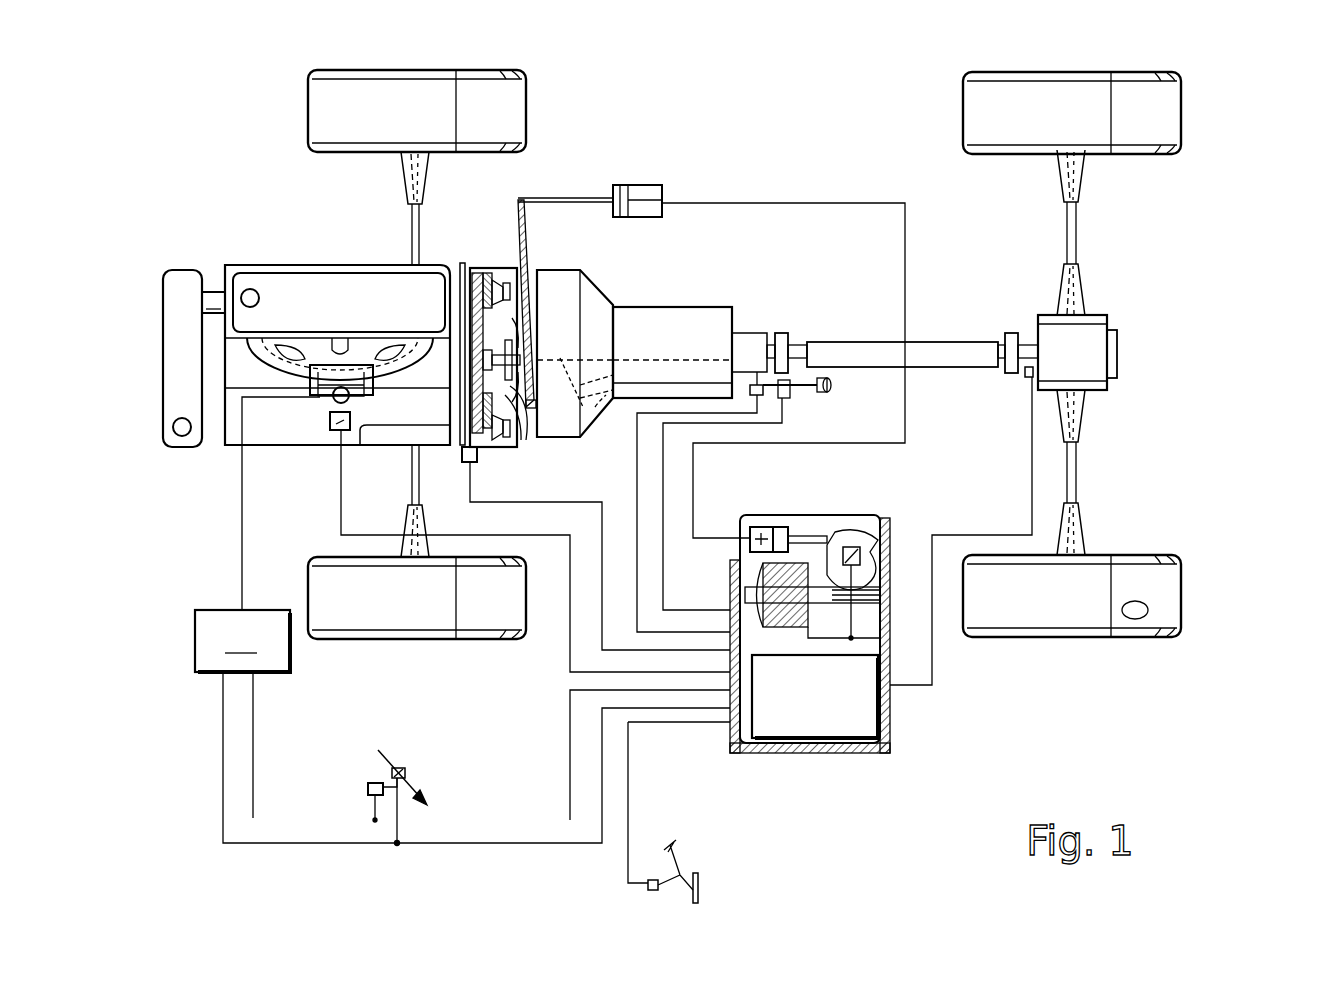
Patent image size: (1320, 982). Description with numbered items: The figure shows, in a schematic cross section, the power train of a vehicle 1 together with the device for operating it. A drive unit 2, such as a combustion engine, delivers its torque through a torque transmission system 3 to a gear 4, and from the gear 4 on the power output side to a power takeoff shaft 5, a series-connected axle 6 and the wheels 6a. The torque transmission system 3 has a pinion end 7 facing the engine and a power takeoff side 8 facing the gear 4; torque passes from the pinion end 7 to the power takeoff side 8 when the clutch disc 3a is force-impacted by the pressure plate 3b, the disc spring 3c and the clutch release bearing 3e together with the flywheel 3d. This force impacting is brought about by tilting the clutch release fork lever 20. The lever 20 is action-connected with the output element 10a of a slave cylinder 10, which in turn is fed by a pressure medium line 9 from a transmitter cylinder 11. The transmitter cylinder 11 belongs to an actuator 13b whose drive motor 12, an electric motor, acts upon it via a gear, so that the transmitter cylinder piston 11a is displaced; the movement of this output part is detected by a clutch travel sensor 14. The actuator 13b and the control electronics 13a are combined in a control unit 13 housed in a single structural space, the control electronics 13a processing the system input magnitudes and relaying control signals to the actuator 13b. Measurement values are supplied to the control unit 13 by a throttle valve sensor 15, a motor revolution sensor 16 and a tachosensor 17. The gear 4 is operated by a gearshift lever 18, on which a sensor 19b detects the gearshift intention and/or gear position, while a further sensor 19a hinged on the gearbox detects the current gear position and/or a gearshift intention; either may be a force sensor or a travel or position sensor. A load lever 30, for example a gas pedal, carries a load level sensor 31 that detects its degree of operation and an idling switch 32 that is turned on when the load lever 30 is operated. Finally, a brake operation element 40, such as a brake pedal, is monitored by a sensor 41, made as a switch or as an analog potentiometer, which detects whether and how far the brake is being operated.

The vehicle 1 is at (775, 90).
The drive unit 2 is at (278, 295).
The torque transmission system 3 is at (513, 353).
The clutch disc 3a is at (516, 440).
The pressure plate 3b is at (503, 300).
The disc spring 3c is at (515, 335).
The flywheel 3d is at (505, 447).
The clutch release bearing 3e is at (590, 410).
The gear 4 is at (668, 367).
The power takeoff shaft 5 is at (946, 342).
The axle 6 is at (1077, 478).
The wheels 6a is at (1152, 112).
The pinion end 7 is at (460, 290).
The power takeoff side 8 is at (545, 275).
The hydraulic line 9 is at (727, 200).
The slave cylinder 10 is at (648, 192).
The output element 10a is at (572, 198).
The transmitter cylinder 11 is at (758, 527).
The transmitter cylinder piston 11a is at (778, 527).
The drive motor 12 is at (755, 575).
The control unit 13 is at (728, 745).
The control electronics 13a is at (788, 707).
The actuator 13b is at (822, 631).
The clutch travel sensor 14 is at (862, 548).
The throttle valve sensor 15 is at (330, 427).
The motor revolution sensor 16 is at (462, 462).
The tachosensor 17 is at (1028, 378).
The gearshift lever 18 is at (782, 342).
The sensor 19a is at (757, 384).
The sensor 19b is at (793, 395).
The clutch release fork lever 20 is at (524, 210).
The load lever 30 is at (393, 777).
The load level sensor 31 is at (372, 783).
The idling switch 32 is at (408, 770).
The brake operation element 40 is at (700, 897).
The sensor 41 is at (645, 888).